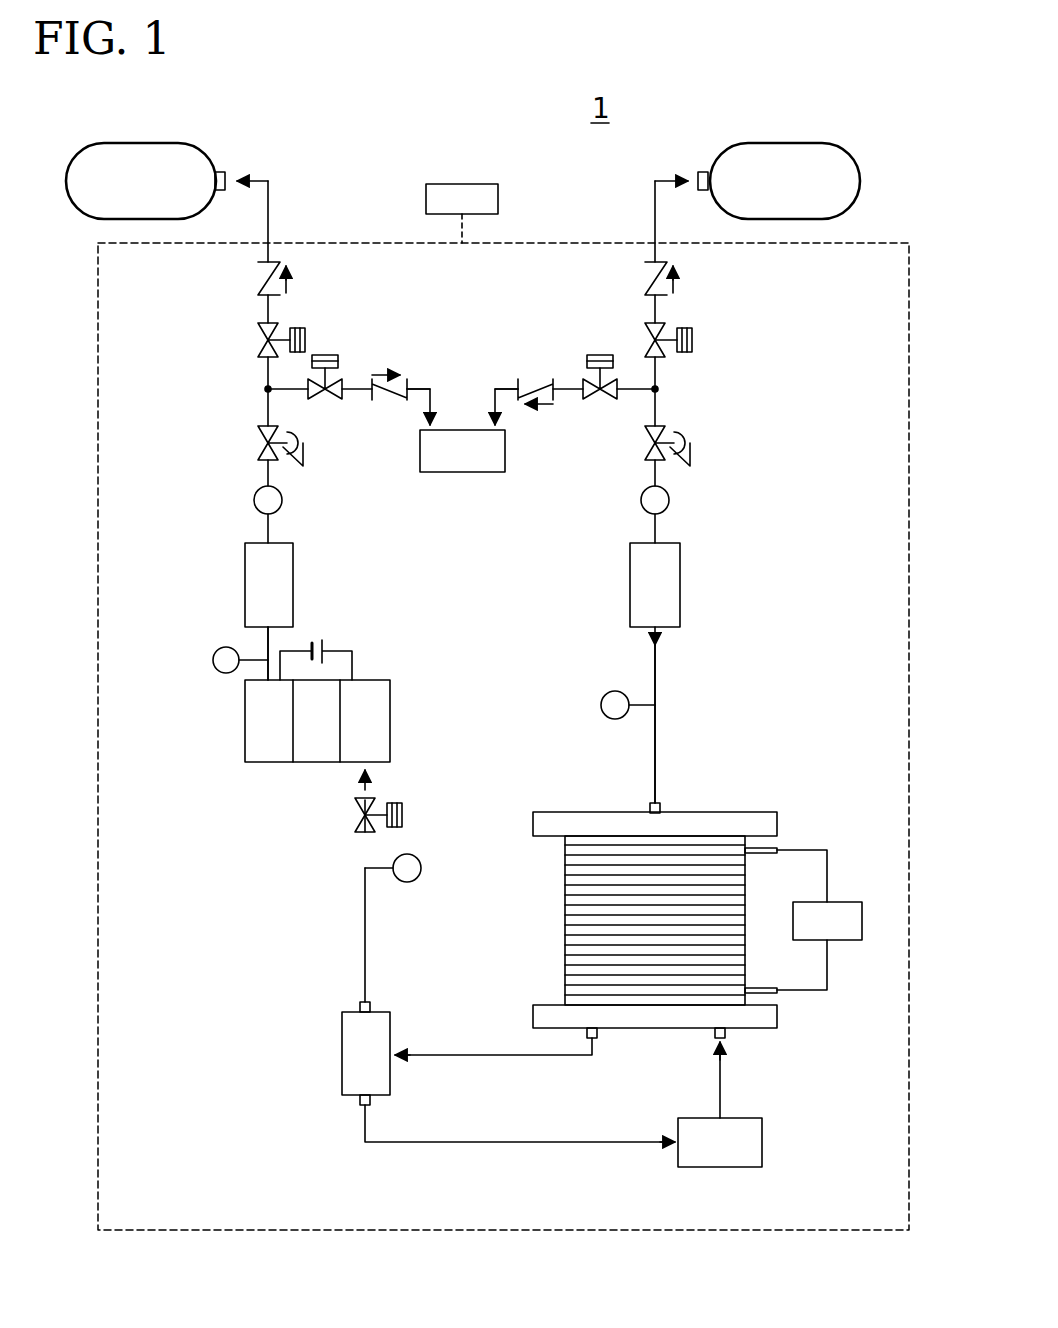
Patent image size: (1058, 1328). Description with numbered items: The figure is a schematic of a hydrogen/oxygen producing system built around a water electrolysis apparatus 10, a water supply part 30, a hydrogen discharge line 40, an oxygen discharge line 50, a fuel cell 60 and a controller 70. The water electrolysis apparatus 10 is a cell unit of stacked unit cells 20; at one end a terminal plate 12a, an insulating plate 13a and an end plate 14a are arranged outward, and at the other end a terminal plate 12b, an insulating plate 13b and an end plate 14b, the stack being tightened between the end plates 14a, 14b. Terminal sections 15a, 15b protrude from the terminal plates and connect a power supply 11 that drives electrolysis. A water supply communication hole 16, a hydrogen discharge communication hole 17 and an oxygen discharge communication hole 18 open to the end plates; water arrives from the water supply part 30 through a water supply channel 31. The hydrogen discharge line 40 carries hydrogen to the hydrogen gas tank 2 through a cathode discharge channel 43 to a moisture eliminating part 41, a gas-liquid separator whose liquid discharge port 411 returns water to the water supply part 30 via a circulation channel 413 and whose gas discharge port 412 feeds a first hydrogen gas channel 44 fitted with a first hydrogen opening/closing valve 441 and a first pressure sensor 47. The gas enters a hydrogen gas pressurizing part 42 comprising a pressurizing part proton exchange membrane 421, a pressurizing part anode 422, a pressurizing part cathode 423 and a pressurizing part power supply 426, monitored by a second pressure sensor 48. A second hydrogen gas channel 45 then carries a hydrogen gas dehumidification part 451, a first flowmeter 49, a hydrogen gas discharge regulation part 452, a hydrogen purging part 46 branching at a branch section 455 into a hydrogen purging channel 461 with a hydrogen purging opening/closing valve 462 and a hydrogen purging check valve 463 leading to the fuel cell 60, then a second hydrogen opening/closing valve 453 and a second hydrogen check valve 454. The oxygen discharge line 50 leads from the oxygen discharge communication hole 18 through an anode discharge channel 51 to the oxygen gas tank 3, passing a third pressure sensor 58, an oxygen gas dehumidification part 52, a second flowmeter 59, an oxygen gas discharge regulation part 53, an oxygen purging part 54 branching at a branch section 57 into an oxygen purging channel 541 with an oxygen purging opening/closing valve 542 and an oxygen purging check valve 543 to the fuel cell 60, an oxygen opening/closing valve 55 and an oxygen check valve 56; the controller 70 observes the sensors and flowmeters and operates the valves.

The hydrogen gas tank 2 is at (218, 146).
The oxygen gas tank 3 is at (705, 146).
The water electrolysis apparatus 10 is at (665, 911).
The power supply 11 is at (842, 900).
The terminal plate 12a is at (595, 850).
The terminal plate 12b is at (565, 990).
The insulating plate 13a is at (627, 842).
The insulating plate 13b is at (567, 1000).
The end plate 14a is at (765, 826).
The end plate 14b is at (765, 1018).
The terminal section 15a is at (755, 854).
The terminal section 15b is at (757, 988).
The water supply communication hole 16 is at (725, 1036).
The hydrogen discharge communication hole 17 is at (597, 1034).
The oxygen discharge communication hole 18 is at (660, 803).
The unit cells 20 is at (565, 942).
The water supply part 30 is at (676, 1128).
The water supply channel 31 is at (716, 1108).
The hydrogen discharge line 40 is at (192, 797).
The moisture eliminating part 41 is at (315, 1045).
The hydrogen gas pressurizing part 42 is at (321, 692).
The cathode discharge channel 43 is at (378, 1012).
The first hydrogen gas channel 44 is at (367, 935).
The second hydrogen gas channel 45 is at (265, 646).
The hydrogen purging part 46 is at (372, 336).
The first pressure sensor 47 is at (422, 868).
The second pressure sensor 48 is at (212, 663).
The first flowmeter 49 is at (283, 500).
The oxygen discharge line 50 is at (775, 663).
The anode discharge channel 51 is at (658, 720).
The oxygen gas dehumidification part 52 is at (682, 590).
The oxygen gas discharge regulation part 53 is at (690, 442).
The oxygen purging part 54 is at (553, 336).
The oxygen opening/closing valve 55 is at (648, 340).
The oxygen check valve 56 is at (648, 276).
The branch section 57 is at (660, 389).
The third pressure sensor 58 is at (601, 705).
The second flowmeter 59 is at (670, 500).
The fuel cell 60 is at (468, 472).
The controller 70 is at (498, 196).
The liquid discharge port 411 is at (358, 1100).
The gas discharge port 412 is at (358, 1007).
The circulation channel 413 is at (440, 1142).
The pressurizing part proton exchange membrane 421 is at (318, 765).
The pressurizing part anode 422 is at (375, 718).
The pressurizing part cathode 423 is at (255, 722).
The pressurizing part power supply 426 is at (330, 648).
The first hydrogen opening/closing valve 441 is at (402, 815).
The hydrogen gas dehumidification part 451 is at (245, 578).
The hydrogen gas discharge regulation part 452 is at (258, 445).
The second hydrogen opening/closing valve 453 is at (305, 335).
The second hydrogen check valve 454 is at (262, 278).
The branch section 455 is at (265, 389).
The hydrogen purging channel 461 is at (372, 392).
The hydrogen purging opening/closing valve 462 is at (325, 400).
The hydrogen purging check valve 463 is at (407, 383).
The oxygen purging channel 541 is at (540, 395).
The oxygen purging opening/closing valve 542 is at (600, 400).
The oxygen purging check valve 543 is at (520, 383).